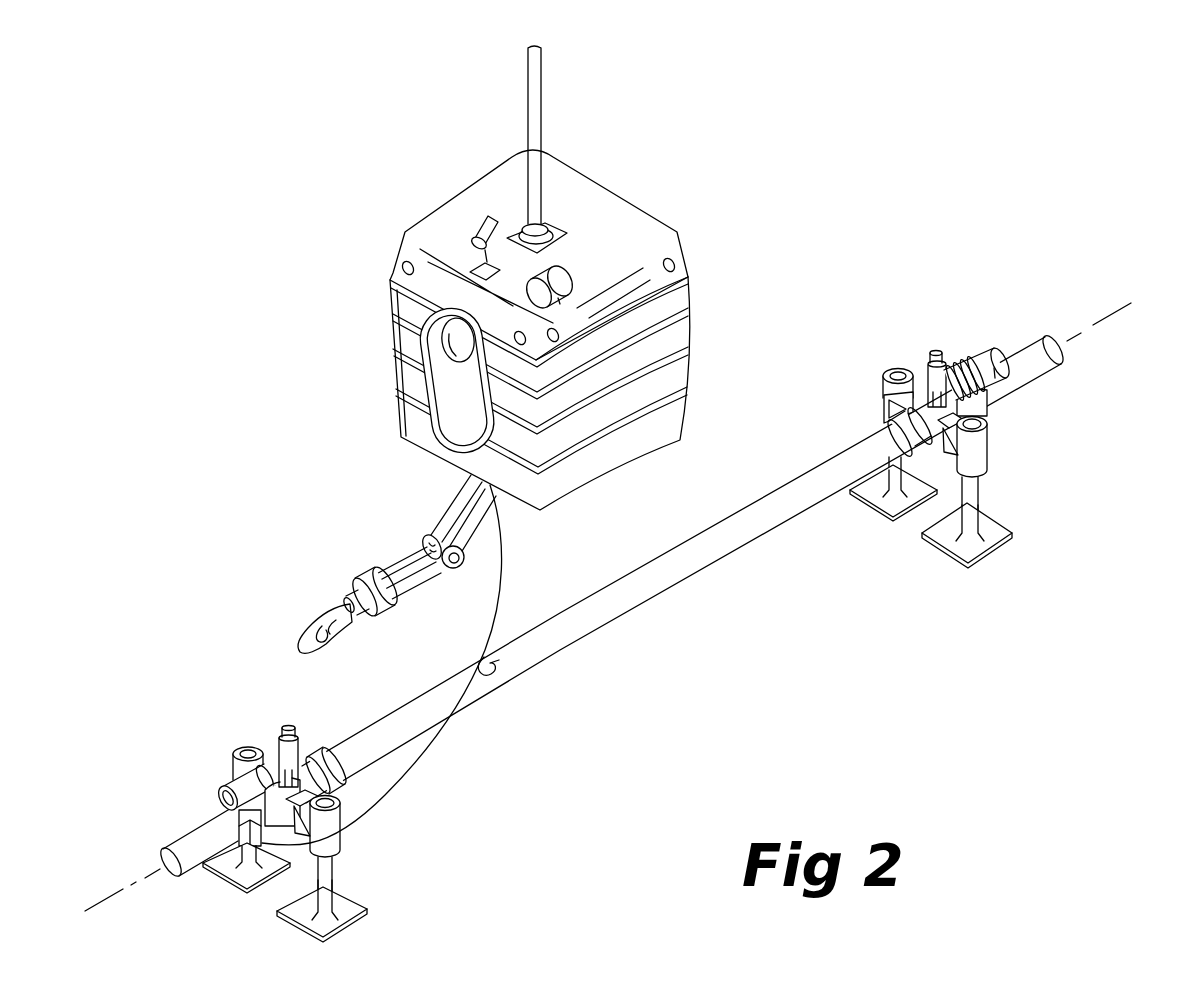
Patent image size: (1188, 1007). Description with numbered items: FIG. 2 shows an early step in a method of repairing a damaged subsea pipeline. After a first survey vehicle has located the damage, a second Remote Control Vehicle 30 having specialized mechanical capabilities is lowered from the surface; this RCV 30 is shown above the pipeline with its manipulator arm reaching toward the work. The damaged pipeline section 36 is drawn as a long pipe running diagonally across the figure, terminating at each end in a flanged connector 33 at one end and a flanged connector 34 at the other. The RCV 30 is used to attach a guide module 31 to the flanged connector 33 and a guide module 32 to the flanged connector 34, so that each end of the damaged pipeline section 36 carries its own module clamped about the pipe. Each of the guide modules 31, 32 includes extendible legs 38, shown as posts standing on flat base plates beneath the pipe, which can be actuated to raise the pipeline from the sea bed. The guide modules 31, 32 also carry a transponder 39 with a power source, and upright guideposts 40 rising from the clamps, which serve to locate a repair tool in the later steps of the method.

The Remote Control Vehicle 30 is at (690, 364).
The guide module 31 is at (375, 855).
The guide module 32 is at (1010, 443).
The flanged connector 33 is at (198, 801).
The flanged connector 34 is at (1020, 410).
The damaged pipeline section 36 is at (540, 647).
The extendible legs 38 is at (340, 878).
The transponder 39 is at (218, 796).
The guideposts 40 is at (287, 728).